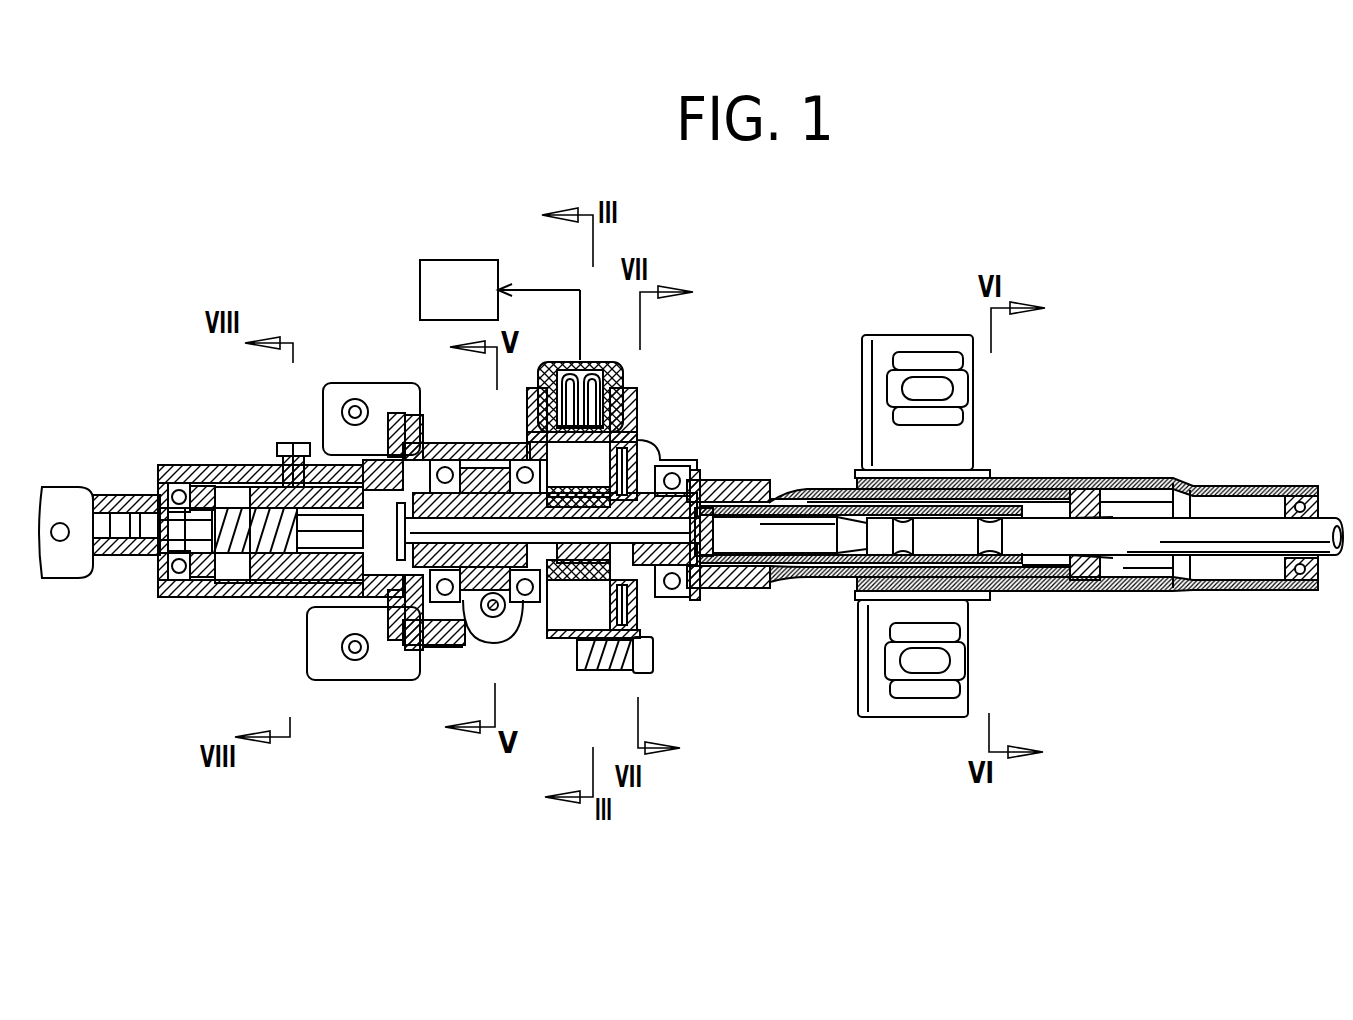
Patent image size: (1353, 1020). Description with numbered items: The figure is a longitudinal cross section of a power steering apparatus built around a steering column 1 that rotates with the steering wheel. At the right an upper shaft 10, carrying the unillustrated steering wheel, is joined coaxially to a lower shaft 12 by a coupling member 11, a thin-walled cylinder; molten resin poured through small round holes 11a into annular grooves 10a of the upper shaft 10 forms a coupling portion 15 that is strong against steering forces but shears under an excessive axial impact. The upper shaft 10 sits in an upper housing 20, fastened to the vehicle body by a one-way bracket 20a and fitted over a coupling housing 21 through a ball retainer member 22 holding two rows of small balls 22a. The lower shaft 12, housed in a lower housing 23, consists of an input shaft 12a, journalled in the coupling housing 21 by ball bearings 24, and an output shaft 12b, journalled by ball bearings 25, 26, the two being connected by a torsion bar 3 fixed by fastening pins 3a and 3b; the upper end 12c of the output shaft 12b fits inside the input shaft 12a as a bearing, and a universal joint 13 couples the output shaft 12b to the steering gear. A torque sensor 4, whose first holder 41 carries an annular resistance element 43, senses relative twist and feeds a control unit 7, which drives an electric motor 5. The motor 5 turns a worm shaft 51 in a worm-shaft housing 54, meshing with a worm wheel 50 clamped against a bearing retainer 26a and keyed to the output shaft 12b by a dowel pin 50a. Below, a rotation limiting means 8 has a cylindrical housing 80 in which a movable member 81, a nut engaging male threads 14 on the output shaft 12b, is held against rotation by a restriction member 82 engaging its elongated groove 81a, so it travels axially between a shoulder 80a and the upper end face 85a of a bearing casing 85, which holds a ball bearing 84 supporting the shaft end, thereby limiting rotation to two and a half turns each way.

The steering column 1 is at (1146, 568).
The torsion bar 3 is at (633, 595).
The fastening pins 3a is at (730, 505).
The fastening pins 3b is at (435, 420).
The torque sensor 4 is at (586, 600).
The electric motor 5 is at (420, 290).
The control unit 7 is at (472, 302).
The rotation limiting means 8 is at (202, 440).
The upper shaft 10 is at (1240, 496).
The annular grooves 10a is at (900, 537).
The coupling member 11 is at (803, 490).
The small round holes 11a is at (867, 591).
The lower shaft 12 is at (163, 523).
The input shaft 12a is at (700, 480).
The output shaft 12b is at (467, 450).
The upper end of output shaft 12c is at (693, 590).
The universal joint 13 is at (62, 487).
The male threads 14 is at (237, 560).
The coupling portion 15 is at (930, 598).
The upper housing 20 is at (1153, 480).
The bracket 20a is at (963, 395).
The coupling housing 21 is at (835, 490).
The ball retainer member 22 is at (1103, 490).
The small balls 22a is at (897, 472).
The lower housing 23 is at (640, 430).
The ball bearings 24 is at (680, 600).
The ball bearing 25 is at (557, 637).
The ball bearing 26 is at (420, 657).
The bearing retainer 26a is at (383, 672).
The first holder 41 is at (643, 433).
The annular resistance element 43 is at (667, 465).
The worm wheel 50 is at (500, 460).
The dowel pin 50a is at (517, 657).
The worm shaft 51 is at (513, 633).
The worm-shaft housing 54 is at (477, 647).
The cylindrical housing 80 is at (240, 598).
The shoulder 80a is at (322, 653).
The movable member 81 is at (277, 567).
The elongated groove 81a is at (292, 443).
The restriction member 82 is at (283, 447).
The ball bearing 84 is at (157, 560).
The bearing casing 85 is at (157, 490).
The upper end face 85a is at (222, 595).